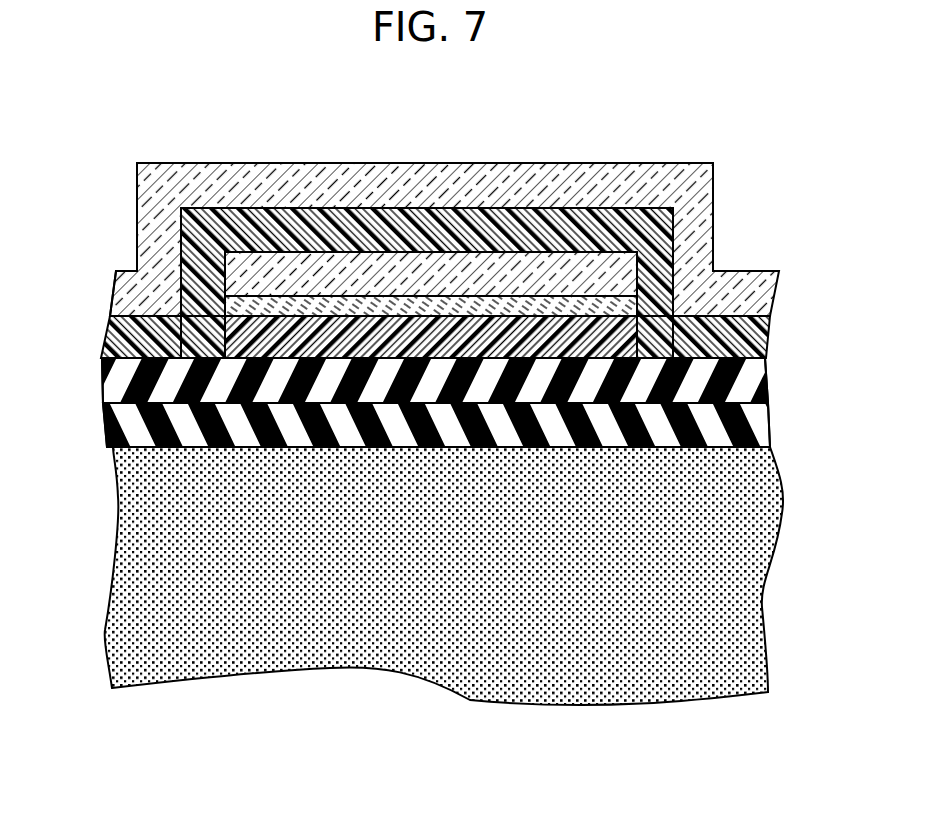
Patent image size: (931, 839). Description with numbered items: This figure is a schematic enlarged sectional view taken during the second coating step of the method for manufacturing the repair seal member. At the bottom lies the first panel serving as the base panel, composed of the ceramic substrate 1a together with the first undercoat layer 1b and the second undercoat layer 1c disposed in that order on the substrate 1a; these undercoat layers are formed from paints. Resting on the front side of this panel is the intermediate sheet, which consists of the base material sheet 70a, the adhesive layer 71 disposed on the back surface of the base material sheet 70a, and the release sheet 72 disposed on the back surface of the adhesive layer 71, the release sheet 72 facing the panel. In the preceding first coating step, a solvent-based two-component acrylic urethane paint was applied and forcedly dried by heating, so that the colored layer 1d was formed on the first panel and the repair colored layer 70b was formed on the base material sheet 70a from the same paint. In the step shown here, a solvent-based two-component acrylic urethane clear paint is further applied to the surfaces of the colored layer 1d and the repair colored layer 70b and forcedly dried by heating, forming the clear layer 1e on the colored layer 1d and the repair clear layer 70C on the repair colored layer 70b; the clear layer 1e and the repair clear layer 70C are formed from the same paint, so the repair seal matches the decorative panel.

The ceramic substrate 1a is at (730, 588).
The first undercoat layer 1b is at (712, 425).
The second undercoat layer 1c is at (720, 380).
The colored layer 1d is at (153, 336).
The clear layer 1e is at (127, 290).
The base material sheet 70a is at (608, 273).
The repair colored layer 70b is at (541, 222).
The repair clear layer 70C is at (438, 180).
The adhesive layer 71 is at (357, 304).
The release sheet 72 is at (282, 328).